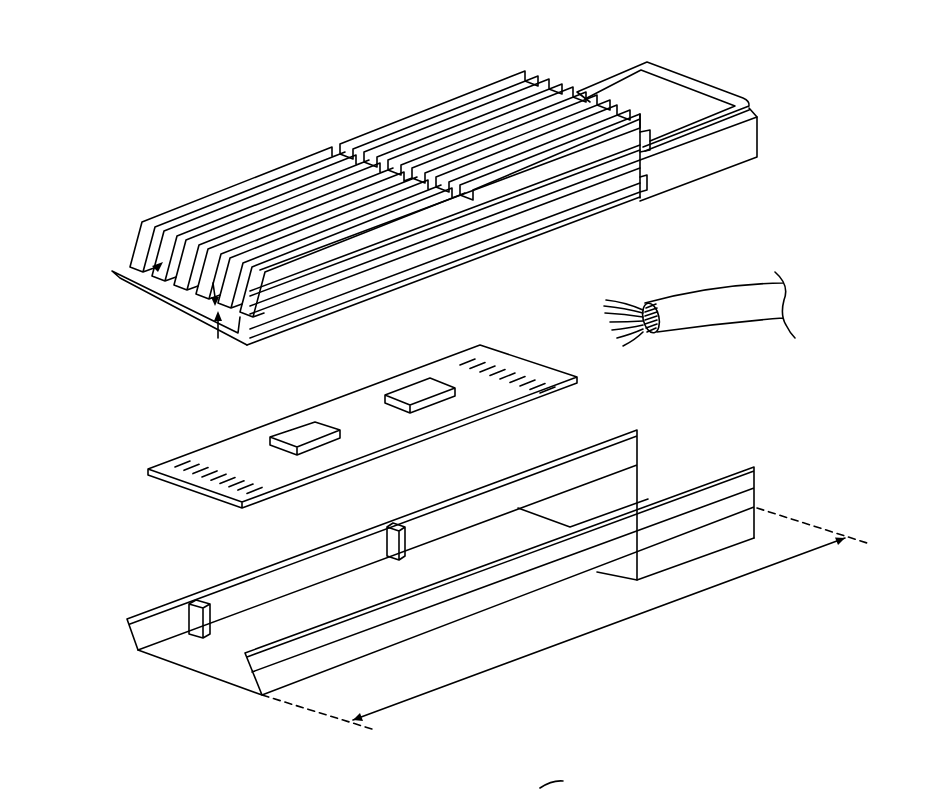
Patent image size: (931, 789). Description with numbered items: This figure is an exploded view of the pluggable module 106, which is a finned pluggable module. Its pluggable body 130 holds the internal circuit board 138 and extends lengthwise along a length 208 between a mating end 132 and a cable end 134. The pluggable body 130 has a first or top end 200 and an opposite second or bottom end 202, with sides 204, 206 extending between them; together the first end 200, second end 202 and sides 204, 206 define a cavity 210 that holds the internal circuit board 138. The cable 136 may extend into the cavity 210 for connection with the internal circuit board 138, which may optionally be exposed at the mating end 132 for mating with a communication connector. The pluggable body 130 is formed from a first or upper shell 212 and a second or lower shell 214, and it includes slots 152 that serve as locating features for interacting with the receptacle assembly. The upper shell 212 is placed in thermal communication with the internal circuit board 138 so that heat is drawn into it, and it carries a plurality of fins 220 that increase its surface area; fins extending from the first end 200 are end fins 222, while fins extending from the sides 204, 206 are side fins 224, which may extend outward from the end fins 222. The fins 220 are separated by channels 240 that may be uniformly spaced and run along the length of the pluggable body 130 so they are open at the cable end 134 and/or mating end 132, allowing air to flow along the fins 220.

The pluggable module 106 is at (148, 84).
The pluggable body 130 is at (760, 163).
The mating end 132 is at (92, 266).
The cable end 134 is at (757, 80).
The cable 136 is at (717, 300).
The internal circuit board 138 is at (445, 372).
The slots 152 is at (410, 625).
The first end 200 is at (668, 98).
The second end 202 is at (235, 668).
The side 204 is at (118, 274).
The side 206 is at (254, 318).
The length 208 is at (585, 632).
The cavity 210 is at (185, 655).
The first shell 212 is at (278, 168).
The second shell 214 is at (461, 626).
The fins 220 is at (200, 199).
The end fins 222 is at (350, 166).
The side fins 224 is at (490, 212).
The channels 240 is at (122, 290).